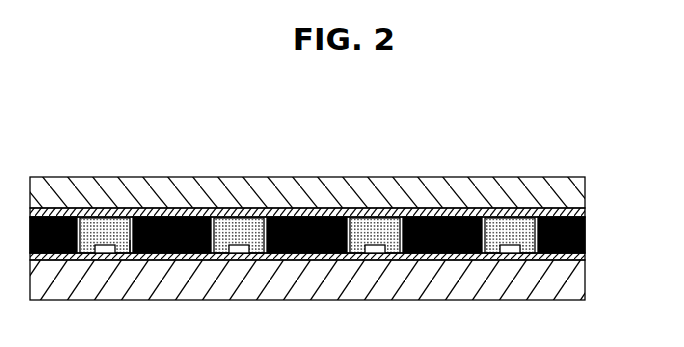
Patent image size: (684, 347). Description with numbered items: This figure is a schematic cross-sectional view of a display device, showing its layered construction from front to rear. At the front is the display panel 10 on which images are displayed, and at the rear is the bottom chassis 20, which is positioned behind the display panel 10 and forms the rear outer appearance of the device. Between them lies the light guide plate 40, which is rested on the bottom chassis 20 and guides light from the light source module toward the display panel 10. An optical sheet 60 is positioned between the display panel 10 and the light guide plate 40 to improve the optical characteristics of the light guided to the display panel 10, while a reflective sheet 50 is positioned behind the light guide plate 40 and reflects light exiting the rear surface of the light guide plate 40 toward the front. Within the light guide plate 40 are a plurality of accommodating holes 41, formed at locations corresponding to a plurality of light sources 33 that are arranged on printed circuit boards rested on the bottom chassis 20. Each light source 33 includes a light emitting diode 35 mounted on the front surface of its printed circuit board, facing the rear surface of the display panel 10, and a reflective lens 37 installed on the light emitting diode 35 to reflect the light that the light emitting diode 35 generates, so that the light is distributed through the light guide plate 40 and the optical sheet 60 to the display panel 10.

The display panel 10 is at (597, 190).
The optical sheet 60 is at (597, 209).
The light guide plate 40 is at (597, 232).
The reflective sheet 50 is at (597, 253).
The bottom chassis 20 is at (597, 276).
The light source 33 is at (92, 138).
The light emitting diode 35 is at (105, 250).
The reflective lens 37 is at (120, 227).
The accommodating hole 41 is at (127, 253).